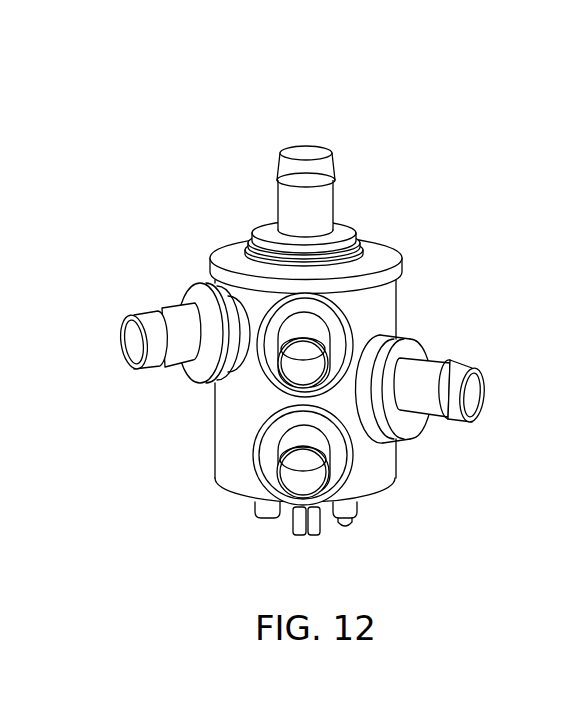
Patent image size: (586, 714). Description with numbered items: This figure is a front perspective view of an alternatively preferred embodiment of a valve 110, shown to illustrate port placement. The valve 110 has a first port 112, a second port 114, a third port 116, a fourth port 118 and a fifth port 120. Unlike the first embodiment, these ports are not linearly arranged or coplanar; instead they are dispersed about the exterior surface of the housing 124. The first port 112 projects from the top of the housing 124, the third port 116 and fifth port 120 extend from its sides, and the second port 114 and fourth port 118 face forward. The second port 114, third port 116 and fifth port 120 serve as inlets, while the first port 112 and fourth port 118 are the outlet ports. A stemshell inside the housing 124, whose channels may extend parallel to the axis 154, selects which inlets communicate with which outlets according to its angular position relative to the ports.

The valve 110 is at (309, 344).
The first port 112 is at (305, 152).
The second port 114 is at (343, 352).
The third port 116 is at (132, 338).
The fourth port 118 is at (275, 472).
The fifth port 120 is at (473, 398).
The housing 124 is at (390, 468).
The axis 154 is at (308, 545).